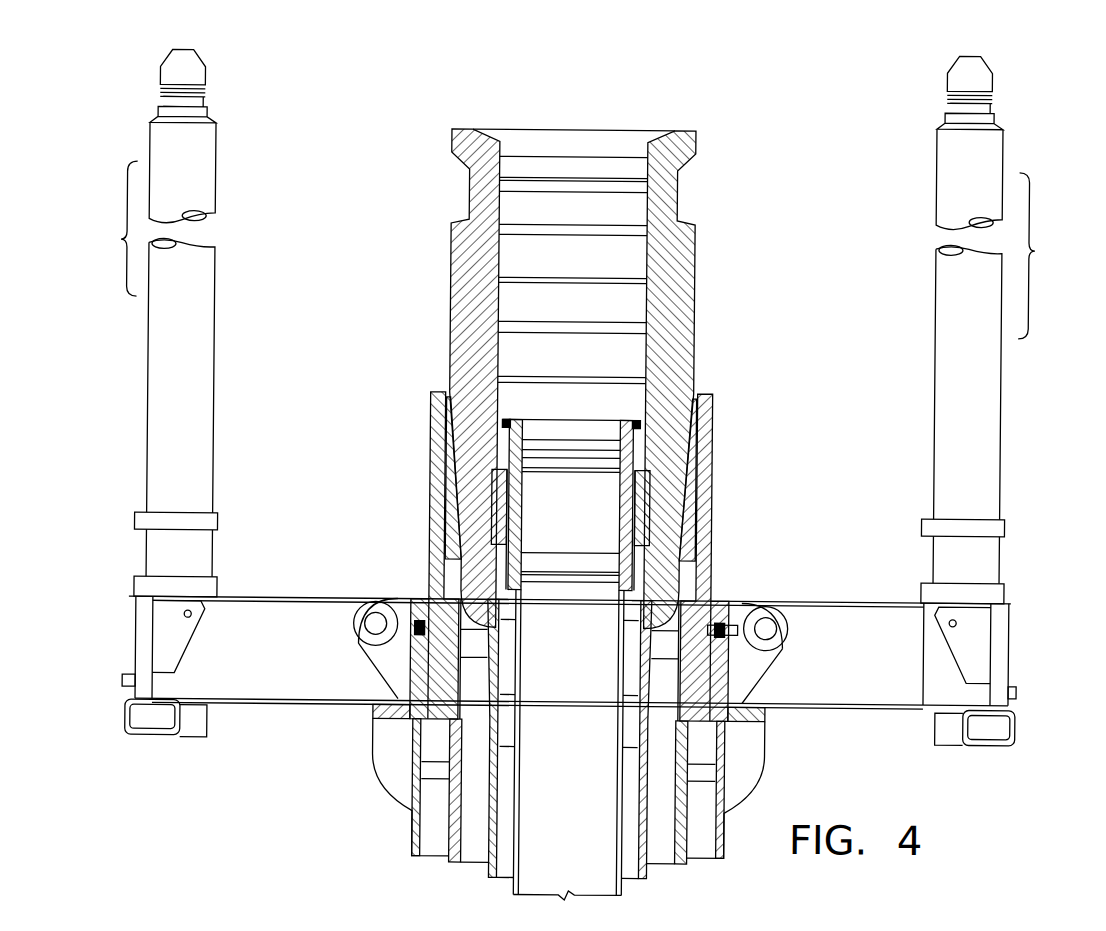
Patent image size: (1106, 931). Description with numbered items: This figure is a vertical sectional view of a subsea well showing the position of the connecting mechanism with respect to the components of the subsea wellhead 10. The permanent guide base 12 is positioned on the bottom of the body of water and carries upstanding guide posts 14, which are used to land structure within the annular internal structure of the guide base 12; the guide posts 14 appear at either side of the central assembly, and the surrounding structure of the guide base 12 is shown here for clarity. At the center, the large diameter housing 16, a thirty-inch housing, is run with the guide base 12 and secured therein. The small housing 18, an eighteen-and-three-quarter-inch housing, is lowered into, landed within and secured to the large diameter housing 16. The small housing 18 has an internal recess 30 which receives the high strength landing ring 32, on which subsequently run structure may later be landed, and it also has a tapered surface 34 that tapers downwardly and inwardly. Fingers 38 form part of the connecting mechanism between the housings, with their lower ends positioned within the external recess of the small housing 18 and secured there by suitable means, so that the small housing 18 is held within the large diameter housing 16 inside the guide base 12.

The subsea wellhead 10 is at (746, 534).
The permanent guide base 12 is at (889, 602).
The guide posts 14 is at (209, 339).
The large diameter housing 16 is at (711, 424).
The small housing 18 is at (690, 331).
The internal recess 30 is at (493, 491).
The high strength landing ring 32 is at (505, 548).
The tapered surface 34 is at (510, 418).
The fingers 38 is at (445, 480).